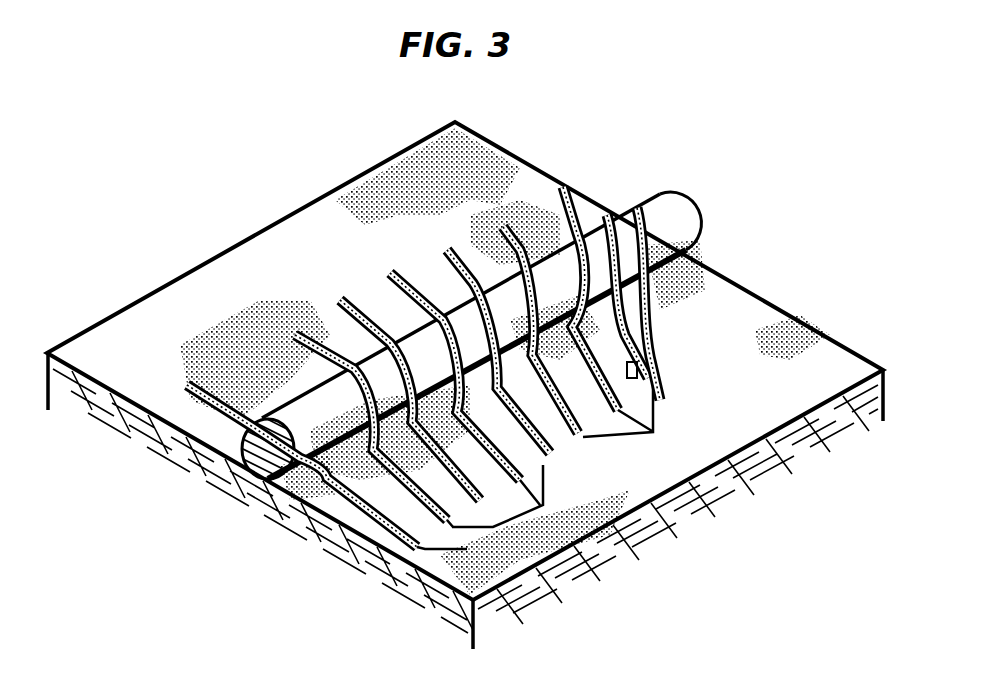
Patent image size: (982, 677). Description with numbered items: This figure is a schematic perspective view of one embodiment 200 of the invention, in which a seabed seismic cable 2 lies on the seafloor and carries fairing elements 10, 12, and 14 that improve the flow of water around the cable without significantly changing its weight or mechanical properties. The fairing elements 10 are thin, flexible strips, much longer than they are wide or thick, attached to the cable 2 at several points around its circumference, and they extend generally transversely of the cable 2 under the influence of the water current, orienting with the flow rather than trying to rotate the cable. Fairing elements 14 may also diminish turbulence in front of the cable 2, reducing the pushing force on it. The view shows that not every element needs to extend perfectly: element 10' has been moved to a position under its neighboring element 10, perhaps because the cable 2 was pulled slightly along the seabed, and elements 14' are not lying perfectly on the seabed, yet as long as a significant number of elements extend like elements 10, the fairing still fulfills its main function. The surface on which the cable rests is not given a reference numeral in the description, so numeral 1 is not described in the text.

The embodiment 200 is at (307, 252).
The concrete slab 1 is at (779, 336).
The cable 2 is at (657, 196).
The fairing elements 10 is at (576, 357).
The fairing element 10' is at (682, 304).
The fairing elements 12 is at (461, 543).
The fairing elements 14 is at (353, 373).
The fairing elements 14' is at (575, 275).